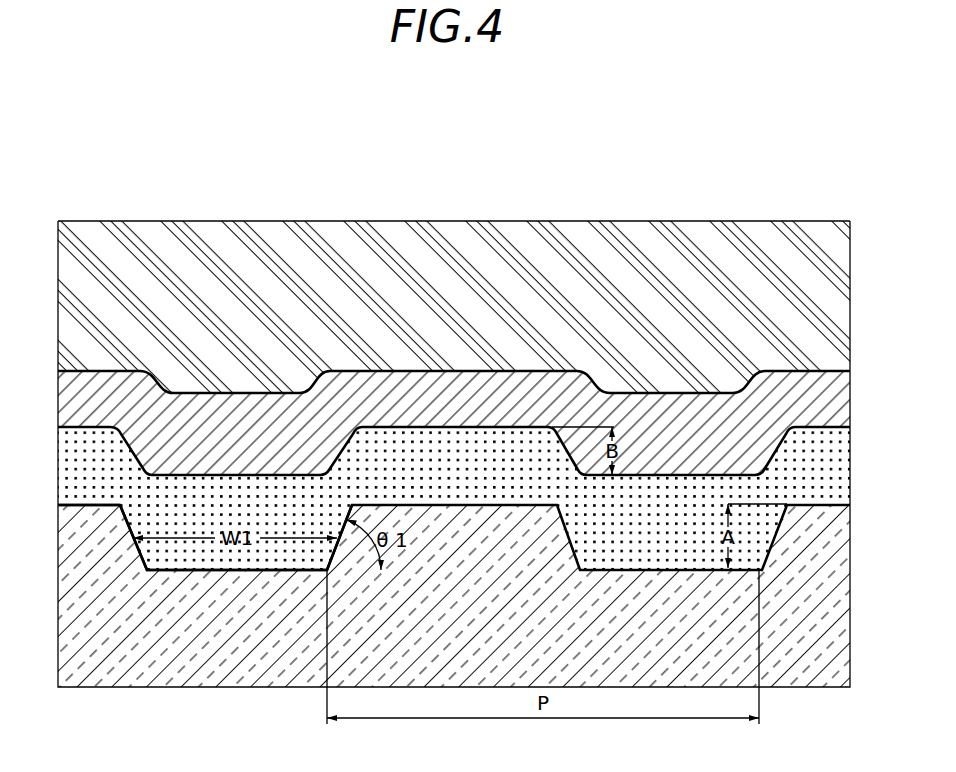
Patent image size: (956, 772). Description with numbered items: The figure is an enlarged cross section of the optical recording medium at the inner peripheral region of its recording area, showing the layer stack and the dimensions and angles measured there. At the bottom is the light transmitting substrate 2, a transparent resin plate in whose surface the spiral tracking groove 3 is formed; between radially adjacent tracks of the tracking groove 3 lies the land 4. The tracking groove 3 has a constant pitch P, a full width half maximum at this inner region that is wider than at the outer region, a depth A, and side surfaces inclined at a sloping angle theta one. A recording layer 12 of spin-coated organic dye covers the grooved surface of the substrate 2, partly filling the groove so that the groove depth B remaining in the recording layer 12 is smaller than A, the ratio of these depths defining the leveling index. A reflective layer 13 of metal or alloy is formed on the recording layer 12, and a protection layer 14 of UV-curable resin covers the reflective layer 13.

The light transmitting substrate 2 is at (812, 653).
The tracking groove 3 is at (277, 572).
The land 4 is at (98, 507).
The recording layer 12 is at (205, 557).
The reflective layer 13 is at (698, 417).
The protection layer 14 is at (225, 262).